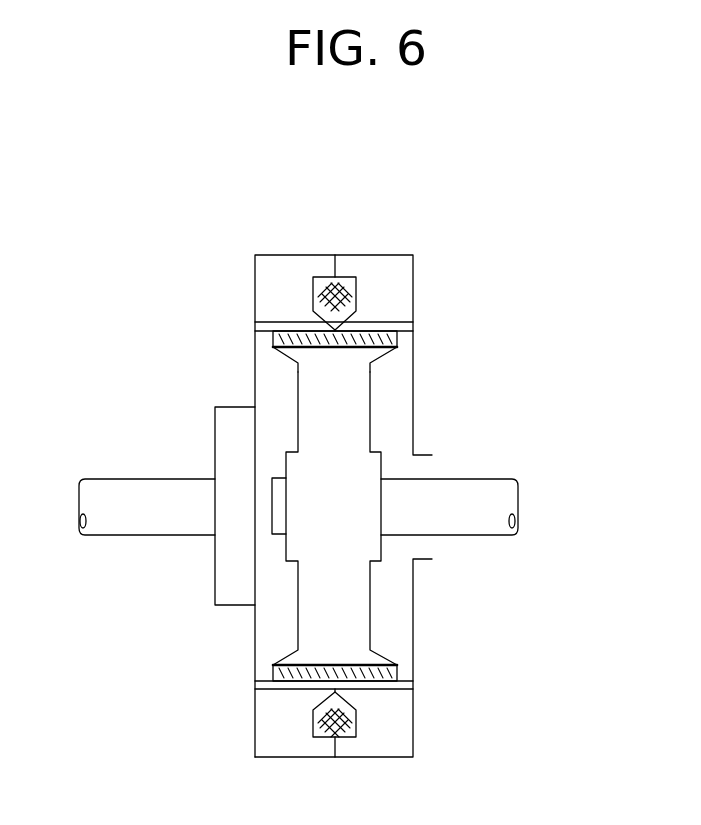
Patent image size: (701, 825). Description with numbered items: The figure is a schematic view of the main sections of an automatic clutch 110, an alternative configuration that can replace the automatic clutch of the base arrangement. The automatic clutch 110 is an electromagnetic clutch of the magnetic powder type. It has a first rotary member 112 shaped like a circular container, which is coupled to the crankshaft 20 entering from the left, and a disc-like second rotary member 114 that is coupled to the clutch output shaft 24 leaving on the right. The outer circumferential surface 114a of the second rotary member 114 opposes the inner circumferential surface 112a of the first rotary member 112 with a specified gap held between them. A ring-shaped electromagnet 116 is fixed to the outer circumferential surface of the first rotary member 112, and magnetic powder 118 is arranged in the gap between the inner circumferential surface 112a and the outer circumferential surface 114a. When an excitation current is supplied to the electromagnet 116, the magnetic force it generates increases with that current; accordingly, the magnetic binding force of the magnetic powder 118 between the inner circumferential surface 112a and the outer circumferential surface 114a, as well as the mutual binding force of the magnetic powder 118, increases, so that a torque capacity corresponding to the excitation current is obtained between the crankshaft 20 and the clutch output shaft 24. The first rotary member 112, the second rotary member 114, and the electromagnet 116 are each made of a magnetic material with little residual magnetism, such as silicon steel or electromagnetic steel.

The automatic clutch 110 is at (492, 285).
The first rotary member 112 is at (255, 393).
The inner circumferential surface 112a is at (267, 336).
The second rotary member 114 is at (365, 428).
The outer circumferential surface 114a is at (396, 343).
The electromagnet 116 is at (383, 270).
The magnetic powder 118 is at (400, 678).
The crankshaft 20 is at (120, 488).
The clutch output shaft 24 is at (482, 497).